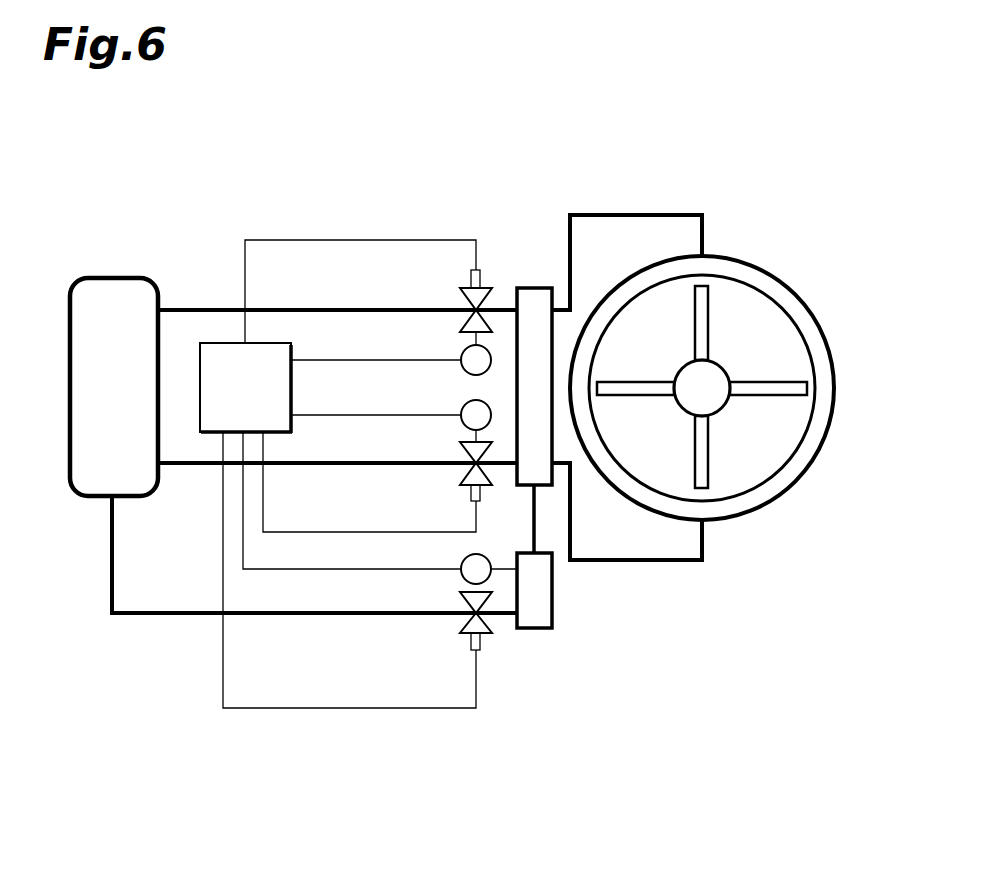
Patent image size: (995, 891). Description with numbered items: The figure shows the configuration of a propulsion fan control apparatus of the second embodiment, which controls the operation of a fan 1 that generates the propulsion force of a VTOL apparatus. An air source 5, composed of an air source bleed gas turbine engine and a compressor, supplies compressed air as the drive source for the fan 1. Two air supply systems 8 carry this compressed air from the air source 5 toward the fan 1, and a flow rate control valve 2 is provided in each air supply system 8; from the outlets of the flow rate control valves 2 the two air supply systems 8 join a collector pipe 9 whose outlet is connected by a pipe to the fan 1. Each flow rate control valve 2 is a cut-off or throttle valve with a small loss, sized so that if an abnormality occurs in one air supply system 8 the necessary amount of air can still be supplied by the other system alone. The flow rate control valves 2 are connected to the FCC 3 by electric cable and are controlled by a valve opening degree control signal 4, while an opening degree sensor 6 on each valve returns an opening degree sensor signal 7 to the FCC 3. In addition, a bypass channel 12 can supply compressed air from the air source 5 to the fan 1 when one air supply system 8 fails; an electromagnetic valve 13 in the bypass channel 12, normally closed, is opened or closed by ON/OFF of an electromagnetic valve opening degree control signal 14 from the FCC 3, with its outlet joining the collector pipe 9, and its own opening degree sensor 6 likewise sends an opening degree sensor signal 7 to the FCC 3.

The fan 1 is at (798, 297).
The flow rate control valve 2 is at (485, 288).
The FCC 3 is at (222, 343).
The valve opening degree control signal 4 is at (377, 359).
The air source 5 is at (113, 277).
The opening degree sensor 6 is at (477, 270).
The opening degree sensor signal 7 is at (407, 240).
The air supply system 8 is at (377, 309).
The collector pipe 9 is at (533, 288).
The bypass channel 12 is at (385, 618).
The electromagnetic valve 13 is at (532, 628).
The electromagnetic valve opening degree control signal 14 is at (375, 568).